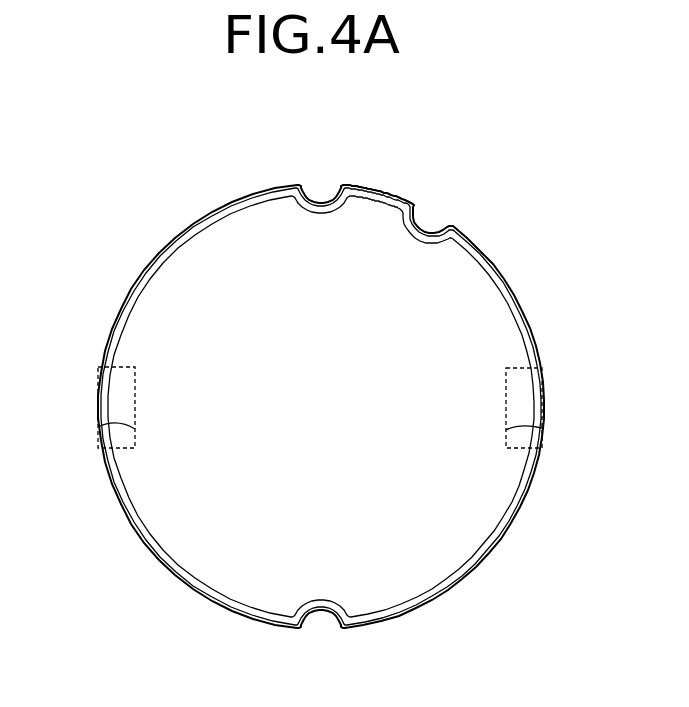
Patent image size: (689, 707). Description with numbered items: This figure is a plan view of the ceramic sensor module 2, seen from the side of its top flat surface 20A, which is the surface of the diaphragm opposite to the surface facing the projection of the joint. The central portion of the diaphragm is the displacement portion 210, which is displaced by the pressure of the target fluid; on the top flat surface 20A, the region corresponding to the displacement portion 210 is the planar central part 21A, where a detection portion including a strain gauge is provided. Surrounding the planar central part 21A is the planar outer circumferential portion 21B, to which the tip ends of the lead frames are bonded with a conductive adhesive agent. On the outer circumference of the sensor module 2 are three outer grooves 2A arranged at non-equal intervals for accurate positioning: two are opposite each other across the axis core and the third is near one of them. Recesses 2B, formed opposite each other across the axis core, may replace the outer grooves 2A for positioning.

The sensor module 2 is at (519, 151).
The outer groove 2A is at (323, 203).
The recess 2B is at (97, 427).
The planar central part 21A is at (320, 392).
The planar outer circumferential portion 21B is at (503, 328).
The top flat surface 20A is at (375, 422).
The displacement portion 210 is at (313, 405).